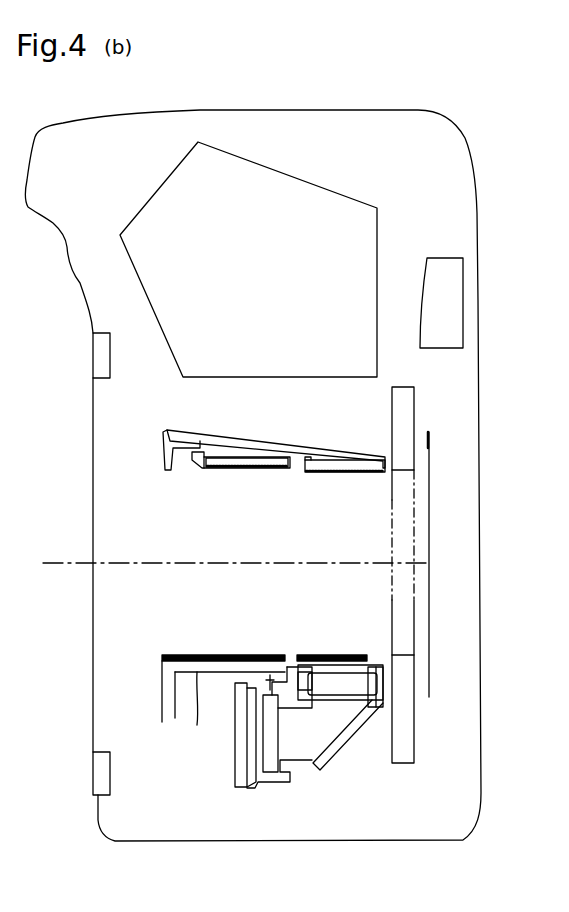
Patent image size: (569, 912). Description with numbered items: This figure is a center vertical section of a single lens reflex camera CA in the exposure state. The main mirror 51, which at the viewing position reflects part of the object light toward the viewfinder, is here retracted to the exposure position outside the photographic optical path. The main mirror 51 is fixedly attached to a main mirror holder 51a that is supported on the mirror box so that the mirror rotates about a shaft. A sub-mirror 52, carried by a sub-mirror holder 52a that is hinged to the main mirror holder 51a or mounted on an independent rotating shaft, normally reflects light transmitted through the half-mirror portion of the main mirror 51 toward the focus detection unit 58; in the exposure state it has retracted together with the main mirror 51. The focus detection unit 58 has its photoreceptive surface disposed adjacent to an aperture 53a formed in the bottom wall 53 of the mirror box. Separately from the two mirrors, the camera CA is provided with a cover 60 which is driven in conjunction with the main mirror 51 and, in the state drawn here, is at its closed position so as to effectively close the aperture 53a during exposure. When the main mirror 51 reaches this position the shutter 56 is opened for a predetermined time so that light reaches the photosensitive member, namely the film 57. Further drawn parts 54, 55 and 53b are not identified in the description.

The camera CA is at (485, 188).
The finder window / pentaprism opening 54 is at (275, 172).
The opening 55 is at (452, 284).
The shutter 56 is at (405, 400).
The film 57 is at (431, 448).
The main mirror 51 is at (268, 447).
The main mirror holder 51a is at (163, 458).
The sub-mirror 52 is at (223, 460).
The sub-mirror holder 52a is at (253, 470).
The bottom wall of mirror box 53 is at (196, 715).
The aperture 53a is at (290, 658).
The horizontal bar portion 53b is at (224, 657).
The cover 60 is at (337, 654).
The focus detection unit 58 is at (343, 770).